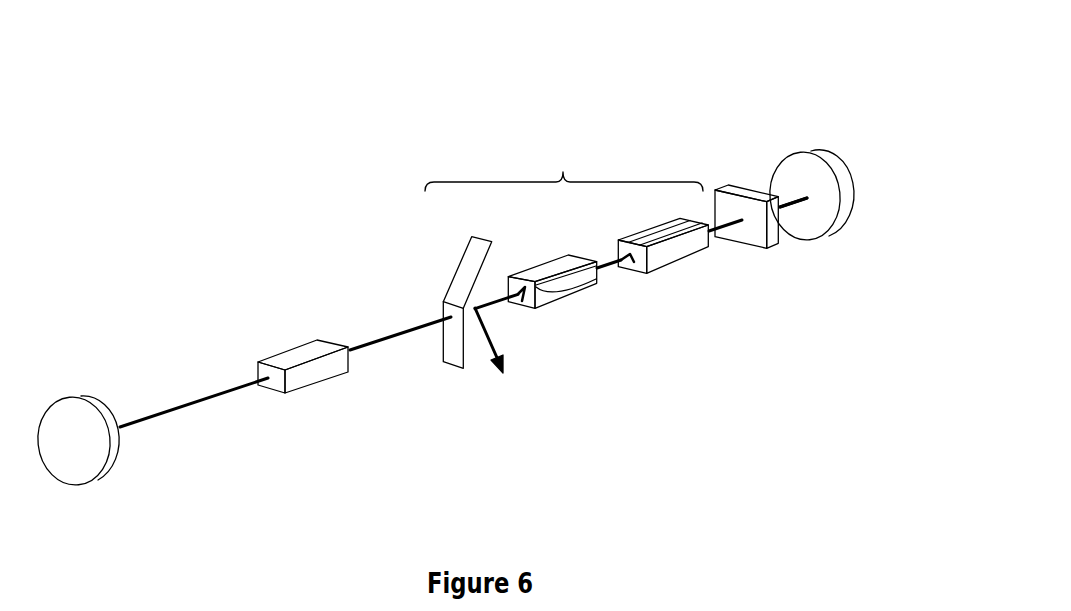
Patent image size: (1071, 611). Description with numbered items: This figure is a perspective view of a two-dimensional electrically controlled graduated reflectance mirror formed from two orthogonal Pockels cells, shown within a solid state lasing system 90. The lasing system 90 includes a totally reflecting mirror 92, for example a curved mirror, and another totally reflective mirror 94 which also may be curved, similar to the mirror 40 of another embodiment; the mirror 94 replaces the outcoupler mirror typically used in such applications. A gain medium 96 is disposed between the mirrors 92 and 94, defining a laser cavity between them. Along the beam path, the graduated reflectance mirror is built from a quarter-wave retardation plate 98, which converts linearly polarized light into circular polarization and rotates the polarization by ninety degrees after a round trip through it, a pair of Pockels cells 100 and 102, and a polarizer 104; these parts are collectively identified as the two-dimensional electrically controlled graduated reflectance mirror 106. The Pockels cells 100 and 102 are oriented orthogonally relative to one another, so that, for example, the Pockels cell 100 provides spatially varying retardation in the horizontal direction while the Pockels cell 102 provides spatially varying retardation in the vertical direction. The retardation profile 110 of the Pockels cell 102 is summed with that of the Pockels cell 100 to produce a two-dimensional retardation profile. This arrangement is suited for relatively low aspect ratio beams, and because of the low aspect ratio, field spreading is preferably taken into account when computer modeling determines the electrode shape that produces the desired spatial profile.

The solid state lasing system 90 is at (843, 93).
The totally reflecting mirror 92 is at (113, 463).
The totally reflective mirror 94 is at (837, 160).
The mirror 40 is at (818, 215).
The gain medium 96 is at (318, 385).
The λ/4 wave retardation plate 98 is at (772, 247).
The Pockels cell 100 is at (688, 262).
The Pockels cell 102 is at (588, 292).
The polarizer 104 is at (460, 265).
The two-dimensional electrically controlled graduated reflectance mirror 106 is at (564, 164).
The retardation profile 110 is at (510, 278).